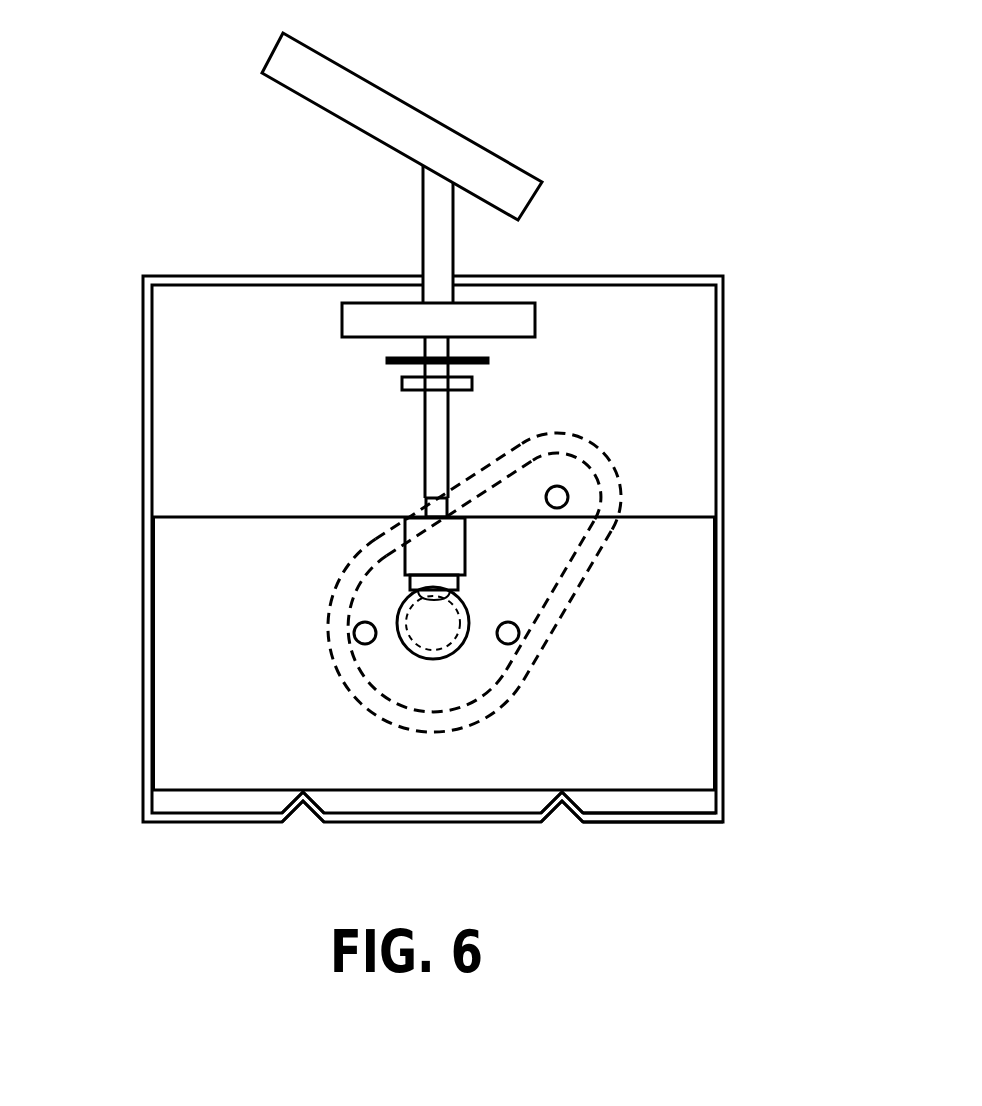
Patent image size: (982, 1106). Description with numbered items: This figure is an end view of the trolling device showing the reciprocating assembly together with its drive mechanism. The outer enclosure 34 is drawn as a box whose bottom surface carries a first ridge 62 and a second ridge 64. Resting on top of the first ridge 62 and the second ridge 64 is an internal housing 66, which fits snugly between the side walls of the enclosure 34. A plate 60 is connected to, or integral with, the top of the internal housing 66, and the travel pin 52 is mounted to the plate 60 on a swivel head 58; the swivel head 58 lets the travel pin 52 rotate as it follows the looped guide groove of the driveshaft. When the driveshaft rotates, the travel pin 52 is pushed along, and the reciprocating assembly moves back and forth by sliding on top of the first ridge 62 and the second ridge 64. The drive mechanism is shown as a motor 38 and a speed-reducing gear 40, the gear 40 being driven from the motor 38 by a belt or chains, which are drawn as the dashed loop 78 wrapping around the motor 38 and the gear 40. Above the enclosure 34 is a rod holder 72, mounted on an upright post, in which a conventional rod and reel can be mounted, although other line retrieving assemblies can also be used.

The enclosure 34 is at (140, 582).
The motor 38 is at (560, 486).
The gear 40 is at (415, 668).
The travel pin 52 is at (457, 597).
The swivel head 58 is at (443, 555).
The plate 60 is at (240, 516).
The first ridge 62 is at (303, 803).
The second ridge 64 is at (562, 803).
The internal housing 66 is at (670, 793).
The rod holder 72 is at (448, 155).
The belt 78 is at (580, 551).